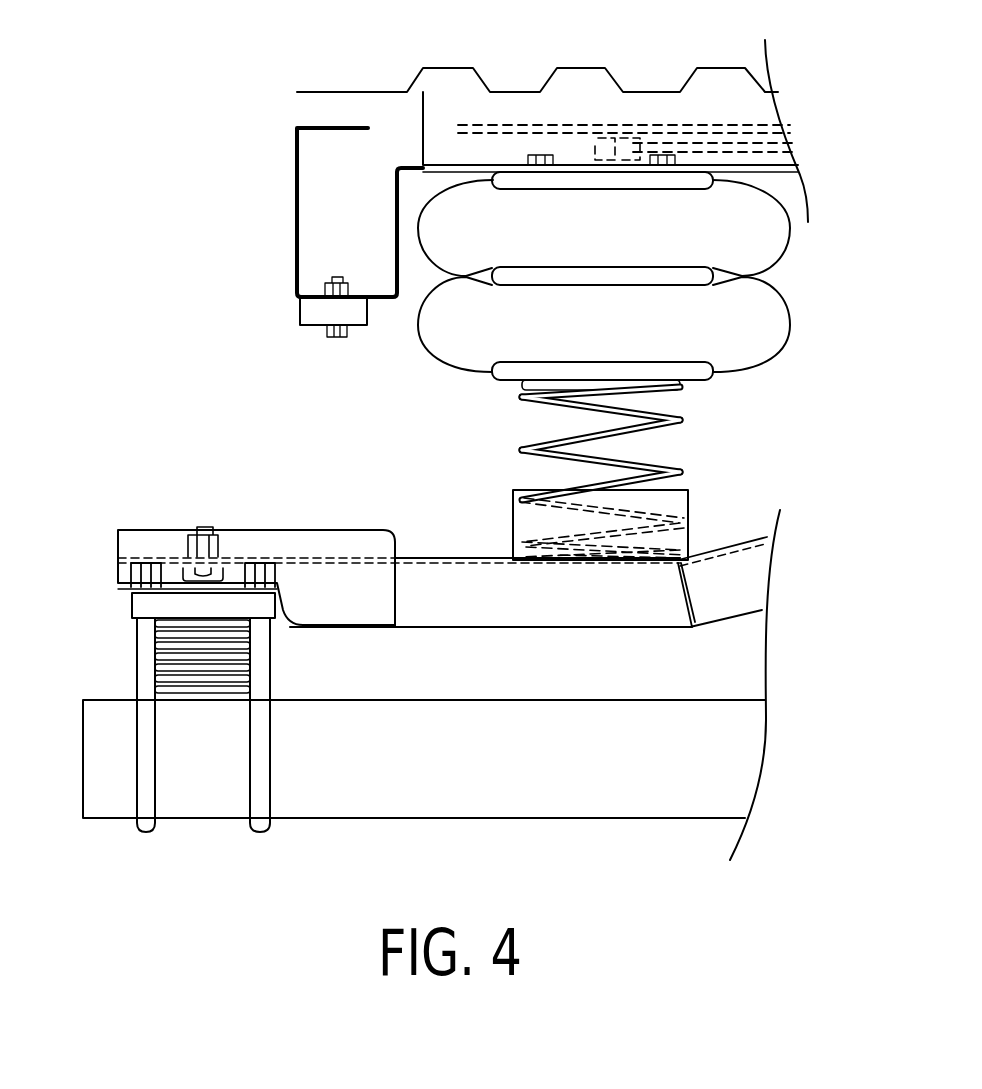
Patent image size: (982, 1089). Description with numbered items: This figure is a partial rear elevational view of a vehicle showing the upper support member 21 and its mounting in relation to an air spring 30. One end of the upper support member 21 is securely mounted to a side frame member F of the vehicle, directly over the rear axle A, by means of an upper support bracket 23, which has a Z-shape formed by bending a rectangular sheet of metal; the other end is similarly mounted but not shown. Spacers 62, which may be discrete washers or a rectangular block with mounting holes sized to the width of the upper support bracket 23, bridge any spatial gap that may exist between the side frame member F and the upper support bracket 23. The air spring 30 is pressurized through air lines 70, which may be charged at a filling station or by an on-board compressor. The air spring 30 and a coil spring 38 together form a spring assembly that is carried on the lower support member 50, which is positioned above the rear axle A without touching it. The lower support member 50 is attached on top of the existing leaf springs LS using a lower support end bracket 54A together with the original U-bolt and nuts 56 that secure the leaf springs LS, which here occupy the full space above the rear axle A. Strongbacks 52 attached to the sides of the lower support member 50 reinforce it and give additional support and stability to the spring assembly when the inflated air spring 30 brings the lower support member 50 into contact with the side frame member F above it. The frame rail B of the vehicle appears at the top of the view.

The vehicle frame rail B is at (582, 75).
The air lines 70 is at (753, 133).
The upper support member 21 is at (447, 142).
The side frame member F is at (297, 225).
The spacers 62 is at (305, 312).
The upper support bracket 23 is at (373, 330).
The air spring 30 is at (778, 320).
The coil spring 38 is at (677, 475).
The lower support member 50 is at (590, 612).
The strongbacks 52 is at (352, 530).
The bolt 54A is at (203, 527).
The nuts 56 is at (132, 573).
The leaf springs LS is at (163, 657).
The rear axle A is at (479, 780).